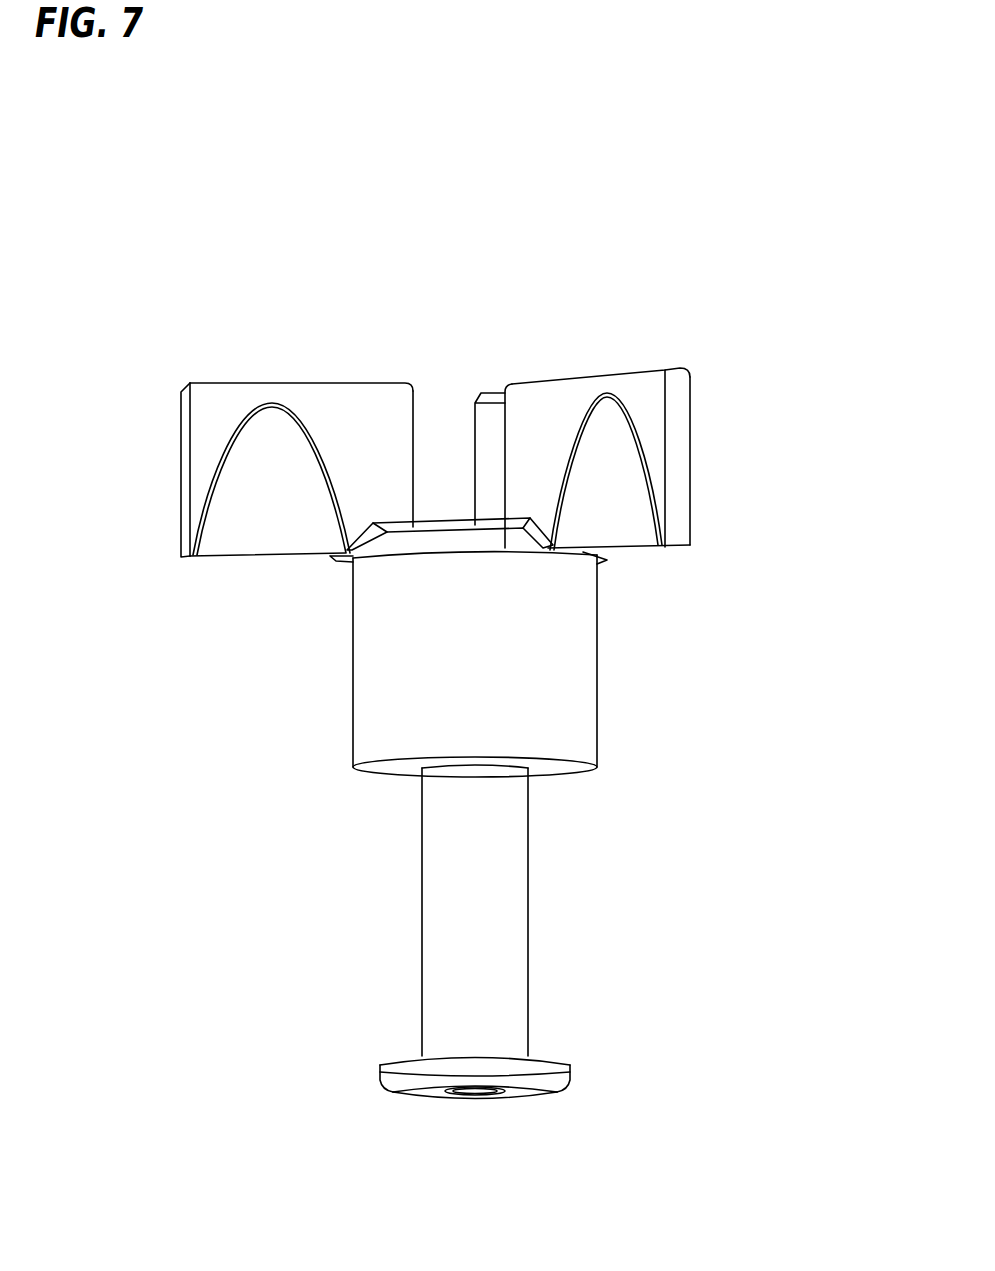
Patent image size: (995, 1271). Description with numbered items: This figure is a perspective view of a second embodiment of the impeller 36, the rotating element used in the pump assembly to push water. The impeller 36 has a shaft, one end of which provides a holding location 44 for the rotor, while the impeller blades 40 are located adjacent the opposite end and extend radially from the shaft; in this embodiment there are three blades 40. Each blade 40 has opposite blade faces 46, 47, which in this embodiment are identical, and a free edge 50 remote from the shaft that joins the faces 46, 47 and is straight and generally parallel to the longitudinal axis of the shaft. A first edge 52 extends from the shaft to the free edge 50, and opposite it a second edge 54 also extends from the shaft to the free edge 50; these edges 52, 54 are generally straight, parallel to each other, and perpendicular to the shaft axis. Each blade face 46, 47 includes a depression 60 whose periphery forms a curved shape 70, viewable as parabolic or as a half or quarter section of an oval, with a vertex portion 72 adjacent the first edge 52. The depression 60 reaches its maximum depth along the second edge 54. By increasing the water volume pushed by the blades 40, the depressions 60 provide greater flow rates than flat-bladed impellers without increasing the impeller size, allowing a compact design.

The impeller 36 is at (710, 196).
The impeller blade 40 is at (698, 331).
The holding location 44 is at (527, 903).
The blade face 46 is at (650, 420).
The blade face 47 is at (385, 402).
The free edge 50 is at (181, 480).
The first edge 52 is at (262, 381).
The second edge 54 is at (258, 560).
The depression 60 is at (303, 457).
The curved shape 70 is at (200, 497).
The vertex portion 72 is at (288, 408).